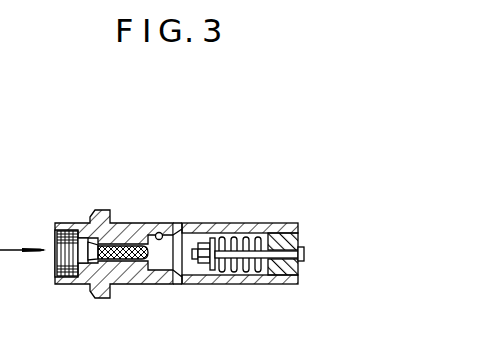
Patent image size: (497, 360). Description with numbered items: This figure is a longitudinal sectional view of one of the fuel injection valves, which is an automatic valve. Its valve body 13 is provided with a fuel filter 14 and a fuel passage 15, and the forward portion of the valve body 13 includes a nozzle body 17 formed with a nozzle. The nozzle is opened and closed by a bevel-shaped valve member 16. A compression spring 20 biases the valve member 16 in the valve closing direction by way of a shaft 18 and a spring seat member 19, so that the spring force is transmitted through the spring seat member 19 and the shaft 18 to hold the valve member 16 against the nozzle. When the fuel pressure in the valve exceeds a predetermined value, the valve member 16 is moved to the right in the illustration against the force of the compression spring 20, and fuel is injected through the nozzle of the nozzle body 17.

The valve body 13 is at (143, 228).
The fuel filter 14 is at (148, 254).
The fuel passage 15 is at (161, 240).
The bevel-shaped valve member 16 is at (304, 255).
The nozzle body 17 is at (283, 235).
The shaft 18 is at (253, 258).
The spring seat member 19 is at (213, 238).
The compression spring 20 is at (245, 240).